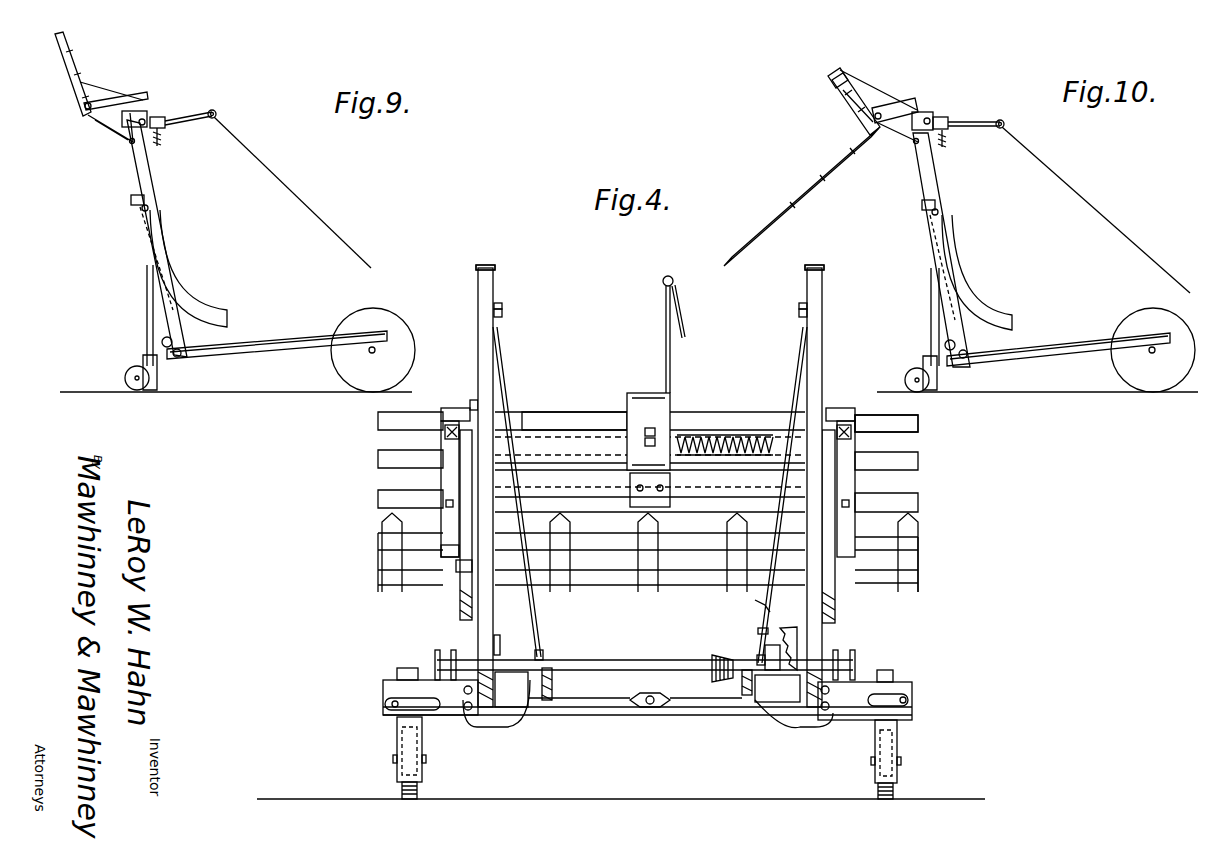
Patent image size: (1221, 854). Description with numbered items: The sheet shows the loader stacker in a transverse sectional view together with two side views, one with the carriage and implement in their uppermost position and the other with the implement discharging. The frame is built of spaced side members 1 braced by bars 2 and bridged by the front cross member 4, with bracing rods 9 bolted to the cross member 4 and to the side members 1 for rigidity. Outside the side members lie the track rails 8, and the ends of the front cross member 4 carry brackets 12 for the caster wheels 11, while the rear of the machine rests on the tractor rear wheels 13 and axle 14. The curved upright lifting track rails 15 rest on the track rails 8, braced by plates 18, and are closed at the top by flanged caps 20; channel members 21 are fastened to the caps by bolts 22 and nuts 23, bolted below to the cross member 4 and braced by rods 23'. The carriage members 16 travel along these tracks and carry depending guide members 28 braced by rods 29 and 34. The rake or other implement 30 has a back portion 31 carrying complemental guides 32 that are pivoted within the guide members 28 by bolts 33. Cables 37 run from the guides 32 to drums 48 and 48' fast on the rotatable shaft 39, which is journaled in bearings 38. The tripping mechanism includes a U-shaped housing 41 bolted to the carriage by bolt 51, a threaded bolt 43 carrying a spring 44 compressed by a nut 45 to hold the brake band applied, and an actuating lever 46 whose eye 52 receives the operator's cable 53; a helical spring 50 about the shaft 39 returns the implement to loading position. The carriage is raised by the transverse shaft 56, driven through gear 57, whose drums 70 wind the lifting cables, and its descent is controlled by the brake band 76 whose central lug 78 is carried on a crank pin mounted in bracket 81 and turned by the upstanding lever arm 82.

In FIG. 4, the side members 1 is at (548, 702).
In FIG. 4, the brace bars 2 is at (512, 708).
In FIG. 4, the front cross member 4 is at (383, 693).
In FIG. 9, the track rails 8 is at (303, 340).
In FIG. 10, the track rails 8 is at (1062, 345).
In FIG. 4, the track rails 8 is at (475, 730).
In FIG. 4, the bracing rods 9 is at (616, 716).
In FIG. 9, the caster wheels 11 is at (124, 379).
In FIG. 10, the caster wheels 11 is at (912, 368).
In FIG. 4, the caster wheels 11 is at (401, 790).
In FIG. 9, the supporting brackets 12 is at (152, 393).
In FIG. 10, the supporting brackets 12 is at (945, 395).
In FIG. 4, the supporting brackets 12 is at (396, 748).
In FIG. 9, the rear wheels 13 is at (358, 310).
In FIG. 10, the rear wheels 13 is at (1150, 308).
In FIG. 9, the axle 14 is at (374, 346).
In FIG. 10, the axle 14 is at (1157, 345).
In FIG. 9, the curved upright lifting track rails 15 is at (180, 300).
In FIG. 10, the curved upright lifting track rails 15 is at (965, 305).
In FIG. 4, the curved upright lifting track rails 15 is at (476, 314).
In FIG. 9, the carriage members 16 is at (165, 242).
In FIG. 10, the carriage members 16 is at (938, 183).
In FIG. 4, the carriage members 16 is at (459, 605).
In FIG. 4, the plates 18 is at (500, 645).
In FIG. 4, the flanged caps 20 is at (480, 265).
In FIG. 9, the channel members 21 is at (145, 310).
In FIG. 10, the channel members 21 is at (930, 313).
In FIG. 4, the channel members 21 is at (504, 370).
In FIG. 4, the bolts 22 is at (503, 312).
In FIG. 4, the nuts 23 is at (651, 291).
In FIG. 4, the brace rods 23' is at (650, 629).
In FIG. 9, the depending guide members 28 is at (100, 128).
In FIG. 10, the depending guide members 28 is at (895, 108).
In FIG. 4, the brace rods 29 is at (445, 560).
In FIG. 9, the rake or other implement 30 is at (72, 48).
In FIG. 10, the rake or other implement 30 is at (788, 204).
In FIG. 4, the rake or other implement 30 is at (378, 521).
In FIG. 10, the back portion 31 is at (830, 92).
In FIG. 4, the back portion 31 is at (919, 440).
In FIG. 10, the complemental guides 32 is at (830, 75).
In FIG. 4, the complemental guides 32 is at (455, 407).
In FIG. 4, the bolts 33 is at (458, 572).
In FIG. 4, the brace rods 34 is at (388, 706).
In FIG. 4, the cables 37 is at (478, 405).
In FIG. 4, the bearings 38 is at (440, 479).
In FIG. 4, the rotatable shaft 39 is at (575, 424).
In FIG. 9, the U-shaped housing 41 is at (167, 131).
In FIG. 10, the U-shaped housing 41 is at (950, 120).
In FIG. 4, the U-shaped housing 41 is at (628, 394).
In FIG. 4, the threaded bolt 43 is at (671, 482).
In FIG. 4, the spring 44 is at (657, 430).
In FIG. 4, the nut 45 is at (657, 440).
In FIG. 9, the actuating lever 46 is at (206, 112).
In FIG. 10, the actuating lever 46 is at (982, 121).
In FIG. 4, the actuating lever 46 is at (665, 325).
In FIG. 9, the drum 48 is at (155, 110).
In FIG. 10, the drum 48 is at (936, 107).
In FIG. 4, the drum 48 is at (436, 416).
In FIG. 4, the drum 48' is at (862, 404).
In FIG. 4, the spring 50 is at (712, 435).
In FIG. 4, the bolt 51 is at (655, 500).
In FIG. 9, the eye 52 is at (215, 110).
In FIG. 10, the eye 52 is at (1002, 121).
In FIG. 4, the eye 52 is at (668, 276).
In FIG. 9, the cable 53 is at (292, 192).
In FIG. 10, the cable 53 is at (1062, 180).
In FIG. 4, the cable 53 is at (685, 320).
In FIG. 4, the transverse shaft 56 is at (655, 660).
In FIG. 4, the gear 57 is at (712, 655).
In FIG. 4, the drums 70 is at (438, 655).
In FIG. 4, the brake band 76 is at (765, 652).
In FIG. 4, the central lug member 78 is at (785, 626).
In FIG. 4, the bracket 81 is at (758, 631).
In FIG. 4, the lever arm 82 is at (755, 603).